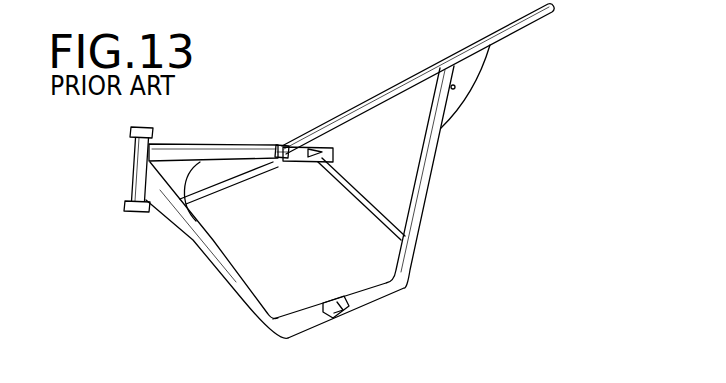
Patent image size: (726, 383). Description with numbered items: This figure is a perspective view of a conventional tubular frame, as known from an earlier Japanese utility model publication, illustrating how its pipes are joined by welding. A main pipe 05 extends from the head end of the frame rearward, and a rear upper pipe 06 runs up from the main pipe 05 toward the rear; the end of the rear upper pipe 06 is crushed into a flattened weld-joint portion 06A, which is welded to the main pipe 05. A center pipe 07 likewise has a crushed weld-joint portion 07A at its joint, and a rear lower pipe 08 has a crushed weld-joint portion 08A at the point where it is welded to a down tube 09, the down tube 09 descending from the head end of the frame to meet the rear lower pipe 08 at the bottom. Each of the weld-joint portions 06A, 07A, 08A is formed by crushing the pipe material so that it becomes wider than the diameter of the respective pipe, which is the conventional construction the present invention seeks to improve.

The main pipe 05 is at (198, 143).
The rear upper pipe 06 is at (420, 74).
The weld-joint portion 06A is at (279, 146).
The center pipe 07 is at (360, 190).
The weld-joint portion 07A is at (336, 152).
The rear lower pipe 08 is at (418, 238).
The weld-joint portion 08A is at (344, 319).
The down tube 09 is at (224, 277).